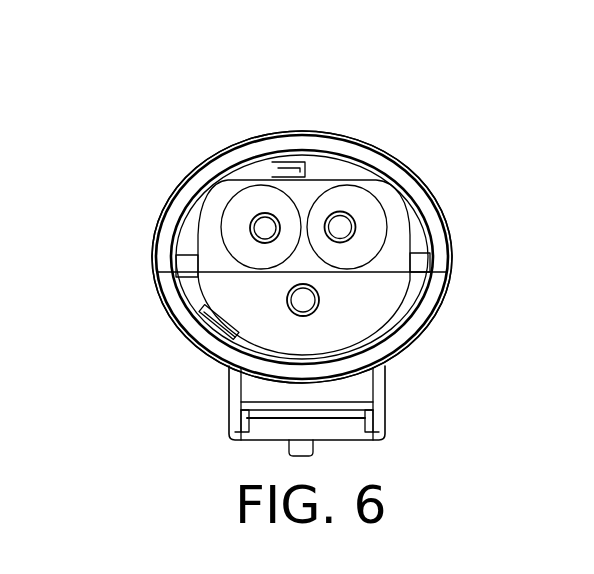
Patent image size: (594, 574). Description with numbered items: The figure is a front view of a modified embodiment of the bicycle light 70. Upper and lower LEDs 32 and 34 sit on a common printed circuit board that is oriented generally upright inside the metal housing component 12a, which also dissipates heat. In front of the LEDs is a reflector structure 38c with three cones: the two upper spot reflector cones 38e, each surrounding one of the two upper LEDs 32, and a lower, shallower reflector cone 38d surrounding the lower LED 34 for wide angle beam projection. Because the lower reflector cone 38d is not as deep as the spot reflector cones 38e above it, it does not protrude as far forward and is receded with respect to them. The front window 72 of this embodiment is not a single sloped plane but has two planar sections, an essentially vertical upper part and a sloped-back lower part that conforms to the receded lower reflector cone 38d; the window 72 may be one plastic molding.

The bicycle light 70 is at (361, 108).
The metal housing component 12a is at (388, 152).
The upper LEDs 32 is at (343, 227).
The lower LED 34 is at (297, 305).
The reflector structure 38c is at (380, 248).
The lower reflector cone 38d is at (367, 305).
The spot reflector cones 38e is at (237, 214).
The front window 72 is at (578, 509).